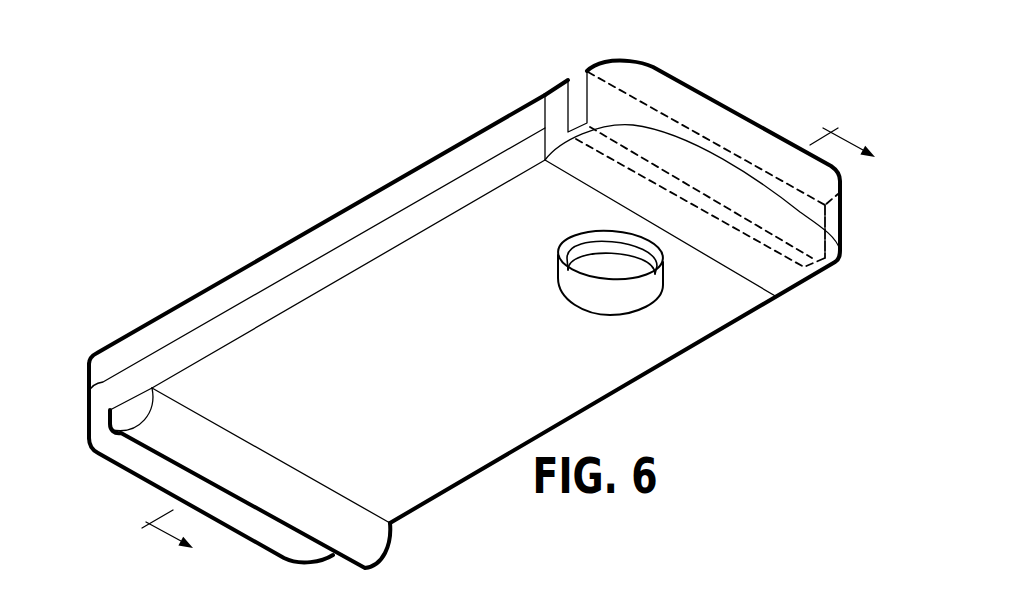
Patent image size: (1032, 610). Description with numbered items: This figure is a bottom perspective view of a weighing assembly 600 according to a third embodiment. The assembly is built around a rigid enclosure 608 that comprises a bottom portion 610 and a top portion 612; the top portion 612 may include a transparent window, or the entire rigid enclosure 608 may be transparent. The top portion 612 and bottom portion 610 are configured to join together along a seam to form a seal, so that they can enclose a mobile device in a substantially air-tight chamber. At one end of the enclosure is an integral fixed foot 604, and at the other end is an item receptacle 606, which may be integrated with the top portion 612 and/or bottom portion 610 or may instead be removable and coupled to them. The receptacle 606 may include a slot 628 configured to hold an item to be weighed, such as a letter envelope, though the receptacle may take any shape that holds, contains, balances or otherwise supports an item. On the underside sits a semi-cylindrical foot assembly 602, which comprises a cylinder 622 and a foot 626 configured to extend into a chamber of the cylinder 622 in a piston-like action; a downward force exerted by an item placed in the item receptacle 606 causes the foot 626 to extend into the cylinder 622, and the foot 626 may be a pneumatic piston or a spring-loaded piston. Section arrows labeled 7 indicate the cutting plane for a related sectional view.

The weighing assembly 600 is at (450, 299).
The cylindrical foot assembly 602 is at (575, 294).
The integral fixed foot 604 is at (380, 563).
The item receptacle 606 is at (747, 119).
The rigid enclosure 608 is at (128, 322).
The bottom portion 610 is at (89, 428).
The top portion 612 is at (89, 378).
The cylinder 622 is at (558, 270).
The foot 626 is at (627, 301).
The slot 628 is at (586, 70).
The section line 7 is at (500, 327).